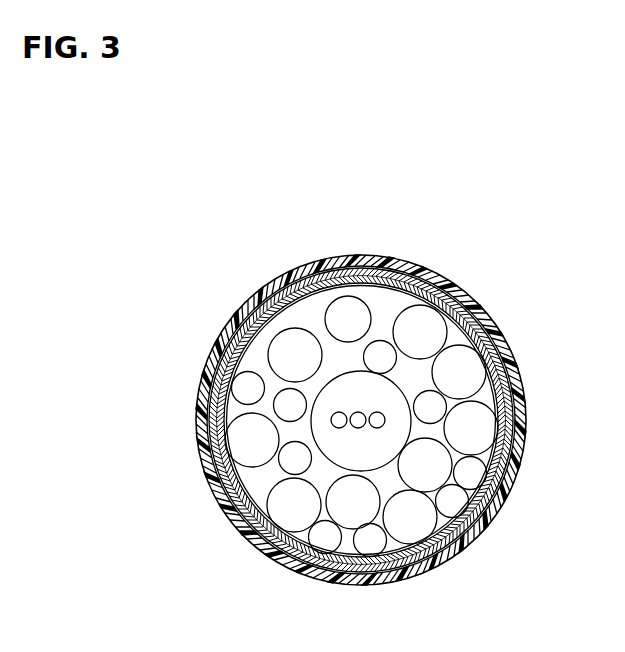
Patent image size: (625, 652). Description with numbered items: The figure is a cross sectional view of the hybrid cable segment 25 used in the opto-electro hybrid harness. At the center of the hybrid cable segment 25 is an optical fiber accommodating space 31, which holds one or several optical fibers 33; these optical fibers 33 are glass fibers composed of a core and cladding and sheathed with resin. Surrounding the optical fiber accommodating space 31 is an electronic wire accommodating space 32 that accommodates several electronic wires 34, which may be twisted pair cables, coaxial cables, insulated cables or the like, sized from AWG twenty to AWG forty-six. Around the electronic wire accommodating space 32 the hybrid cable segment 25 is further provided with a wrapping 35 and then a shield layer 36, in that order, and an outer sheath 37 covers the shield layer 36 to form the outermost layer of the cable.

The hybrid cable segment 25 is at (366, 392).
The optical fiber accommodating space 31 is at (323, 403).
The electronic wire accommodating space 32 is at (245, 476).
The optical fibers 33 is at (339, 411).
The electronic wires 34 is at (355, 285).
The wrapping 35 is at (467, 523).
The shield layer 36 is at (505, 495).
The outer sheath 37 is at (520, 456).